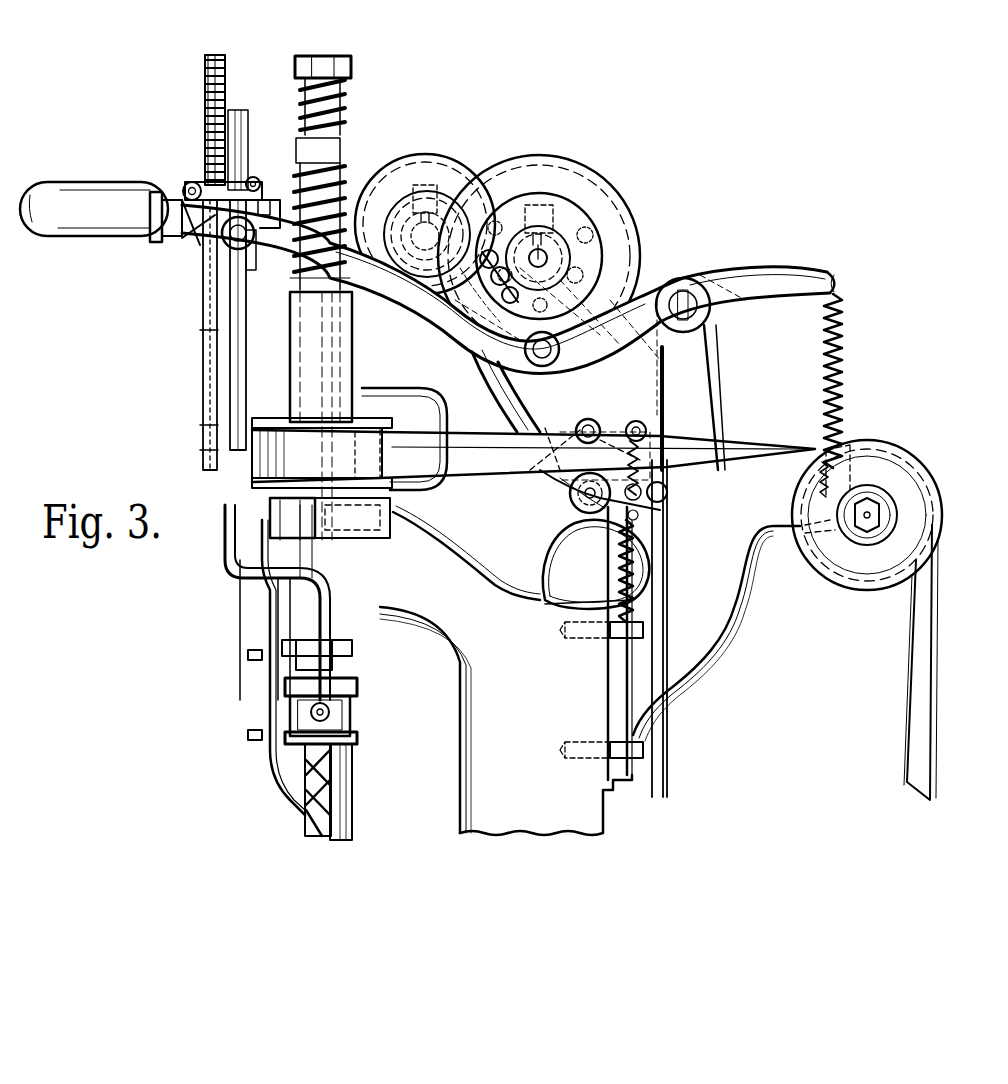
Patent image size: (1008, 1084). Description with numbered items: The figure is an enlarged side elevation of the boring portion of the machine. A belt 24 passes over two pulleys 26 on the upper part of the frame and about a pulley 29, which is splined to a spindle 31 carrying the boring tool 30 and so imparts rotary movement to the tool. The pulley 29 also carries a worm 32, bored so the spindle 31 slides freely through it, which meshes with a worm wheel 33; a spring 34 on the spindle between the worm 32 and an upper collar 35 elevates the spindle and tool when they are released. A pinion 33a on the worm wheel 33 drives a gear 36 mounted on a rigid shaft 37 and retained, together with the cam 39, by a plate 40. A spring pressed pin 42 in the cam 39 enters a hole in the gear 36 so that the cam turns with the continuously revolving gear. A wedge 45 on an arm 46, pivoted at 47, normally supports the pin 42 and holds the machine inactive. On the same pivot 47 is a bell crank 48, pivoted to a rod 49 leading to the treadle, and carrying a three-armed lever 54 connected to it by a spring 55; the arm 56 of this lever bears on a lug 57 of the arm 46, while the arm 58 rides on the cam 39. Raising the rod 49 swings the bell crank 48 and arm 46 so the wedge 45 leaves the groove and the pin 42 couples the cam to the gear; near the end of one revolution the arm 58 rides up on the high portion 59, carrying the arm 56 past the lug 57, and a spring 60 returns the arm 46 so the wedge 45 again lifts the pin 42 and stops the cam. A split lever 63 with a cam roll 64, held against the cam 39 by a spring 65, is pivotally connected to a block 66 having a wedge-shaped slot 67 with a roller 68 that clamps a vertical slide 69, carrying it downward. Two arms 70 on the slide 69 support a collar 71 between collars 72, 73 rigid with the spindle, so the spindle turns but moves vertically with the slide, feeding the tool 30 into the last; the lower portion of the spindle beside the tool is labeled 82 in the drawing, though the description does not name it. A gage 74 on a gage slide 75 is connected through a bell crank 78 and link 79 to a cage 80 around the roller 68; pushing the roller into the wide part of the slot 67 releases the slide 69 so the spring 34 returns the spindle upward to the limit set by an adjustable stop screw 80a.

The belt 24 is at (923, 738).
The pulley 26 is at (913, 511).
The pulley 29 is at (367, 481).
The boring tool 30 is at (303, 817).
The spindle 31 is at (331, 150).
The worm 32 is at (347, 240).
The worm wheel 33 is at (420, 157).
The pinion 33a is at (437, 220).
The spring 34 is at (338, 104).
The collar 35 is at (340, 75).
The gear 36 is at (622, 192).
The shaft 37 is at (585, 232).
The cam 39 is at (530, 158).
The plate 40 is at (547, 255).
The spring pressed pin 42 is at (550, 260).
The wedge 45 is at (473, 300).
The arm 46 is at (560, 493).
The pivot 47 is at (588, 507).
The bell crank 48 is at (662, 487).
The rod 49 is at (656, 740).
The three-armed lever 54 is at (615, 430).
The spring 55 is at (722, 440).
The arm 56 is at (572, 428).
The lug 57 is at (530, 467).
The arm 58 is at (516, 398).
The high portion 59 is at (470, 373).
The spring 60 is at (630, 578).
The split lever 63 is at (638, 326).
The cam roll 64 is at (612, 365).
The spring 65 is at (843, 362).
The block 66 is at (268, 202).
The wedge-shaped slot 67 is at (258, 272).
The roller 68 is at (268, 208).
The slide 69 is at (242, 402).
The arm 70 is at (270, 607).
The collar 71 is at (358, 714).
The collar 72 is at (377, 667).
The collar 73 is at (360, 737).
The gage 74 is at (276, 762).
The gage slide 75 is at (208, 370).
The bell crank 78 is at (192, 242).
The link 79 is at (263, 205).
The cage 80 is at (233, 275).
The adjustable stop screw 80a is at (205, 547).
The spindle 82 is at (338, 797).